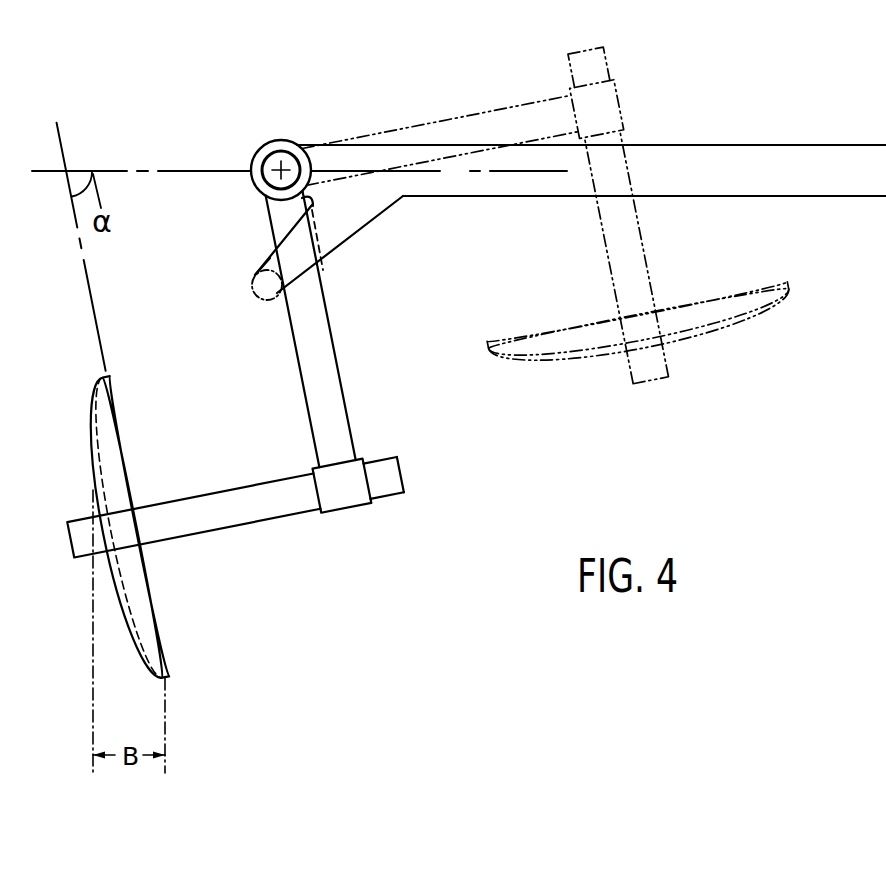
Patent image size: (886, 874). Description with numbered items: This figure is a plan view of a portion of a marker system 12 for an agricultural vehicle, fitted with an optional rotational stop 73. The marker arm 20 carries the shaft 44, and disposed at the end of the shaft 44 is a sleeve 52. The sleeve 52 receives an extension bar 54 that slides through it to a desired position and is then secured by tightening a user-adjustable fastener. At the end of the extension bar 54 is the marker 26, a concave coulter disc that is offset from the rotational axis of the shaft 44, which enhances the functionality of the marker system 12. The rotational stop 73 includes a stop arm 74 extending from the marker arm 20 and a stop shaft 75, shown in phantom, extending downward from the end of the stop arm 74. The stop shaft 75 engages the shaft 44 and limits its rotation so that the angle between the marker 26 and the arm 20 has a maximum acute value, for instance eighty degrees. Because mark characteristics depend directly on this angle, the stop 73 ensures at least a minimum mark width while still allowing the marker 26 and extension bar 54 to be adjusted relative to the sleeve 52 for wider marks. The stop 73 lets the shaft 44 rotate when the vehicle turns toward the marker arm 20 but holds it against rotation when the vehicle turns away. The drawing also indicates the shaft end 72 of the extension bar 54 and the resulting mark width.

The marker system 12 is at (483, 432).
The marker arm 20 is at (710, 198).
The marker 26 is at (100, 575).
The shaft 44 is at (330, 352).
The sleeve 52 is at (347, 495).
The extension bar 54 is at (241, 487).
The shaft end 72 is at (402, 492).
The rotational stop 73 is at (256, 250).
The stop arm 74 is at (357, 231).
The stop shaft 75 is at (266, 302).